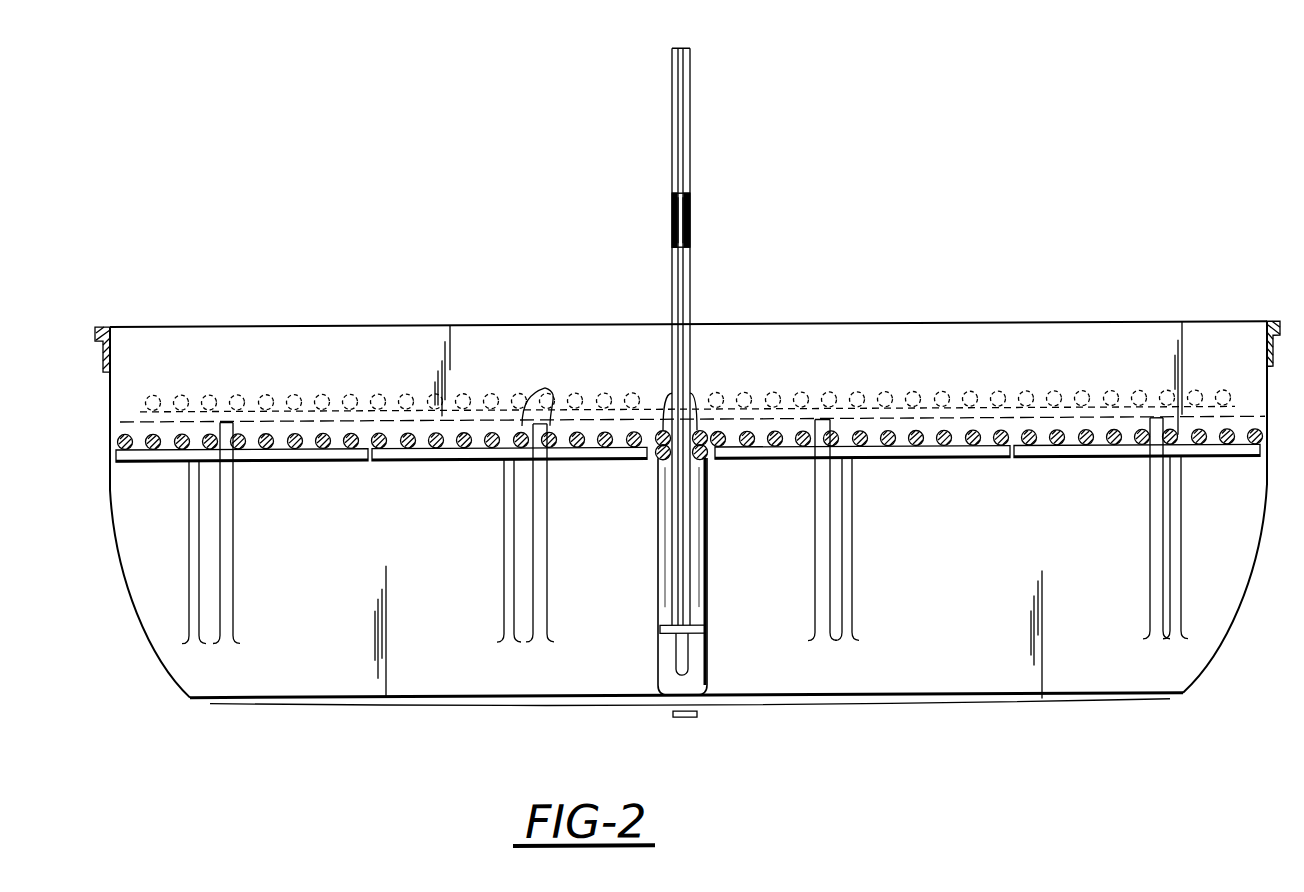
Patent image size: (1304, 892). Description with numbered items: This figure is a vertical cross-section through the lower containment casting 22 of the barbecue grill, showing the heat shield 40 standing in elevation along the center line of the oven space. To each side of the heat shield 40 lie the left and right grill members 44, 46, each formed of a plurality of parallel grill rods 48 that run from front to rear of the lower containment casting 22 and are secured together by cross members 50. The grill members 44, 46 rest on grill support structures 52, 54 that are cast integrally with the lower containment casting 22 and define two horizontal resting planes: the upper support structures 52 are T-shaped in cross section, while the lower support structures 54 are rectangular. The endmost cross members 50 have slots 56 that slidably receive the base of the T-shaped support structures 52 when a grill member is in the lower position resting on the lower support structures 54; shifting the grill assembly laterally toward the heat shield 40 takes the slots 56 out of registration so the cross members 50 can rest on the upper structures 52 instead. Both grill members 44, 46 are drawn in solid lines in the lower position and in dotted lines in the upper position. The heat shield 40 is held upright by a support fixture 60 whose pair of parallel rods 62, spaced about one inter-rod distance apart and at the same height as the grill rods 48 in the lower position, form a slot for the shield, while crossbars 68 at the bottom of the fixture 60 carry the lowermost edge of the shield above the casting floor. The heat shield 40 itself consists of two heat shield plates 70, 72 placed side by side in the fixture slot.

The lower containment casting 22 is at (1150, 700).
The heat shield 40 is at (690, 100).
The left grill member 44 is at (375, 463).
The right grill member 46 is at (1013, 460).
The grill rods 48 is at (545, 390).
The cross members 50 is at (468, 463).
The upper grill support structures 52 is at (233, 548).
The lower grill support structures 54 is at (189, 528).
The slots 56 is at (250, 418).
The support fixture 60 is at (707, 688).
The parallel rods 62 is at (668, 404).
The crossbars 68 is at (707, 636).
The heat shield plate 70 is at (672, 170).
The heat shield plate 72 is at (690, 182).